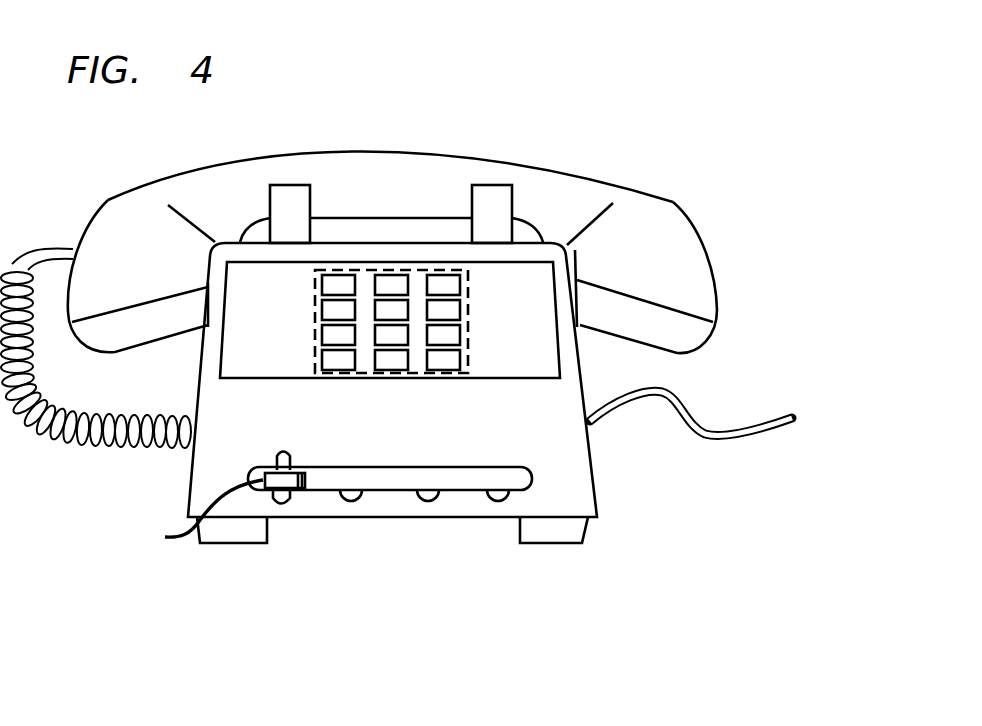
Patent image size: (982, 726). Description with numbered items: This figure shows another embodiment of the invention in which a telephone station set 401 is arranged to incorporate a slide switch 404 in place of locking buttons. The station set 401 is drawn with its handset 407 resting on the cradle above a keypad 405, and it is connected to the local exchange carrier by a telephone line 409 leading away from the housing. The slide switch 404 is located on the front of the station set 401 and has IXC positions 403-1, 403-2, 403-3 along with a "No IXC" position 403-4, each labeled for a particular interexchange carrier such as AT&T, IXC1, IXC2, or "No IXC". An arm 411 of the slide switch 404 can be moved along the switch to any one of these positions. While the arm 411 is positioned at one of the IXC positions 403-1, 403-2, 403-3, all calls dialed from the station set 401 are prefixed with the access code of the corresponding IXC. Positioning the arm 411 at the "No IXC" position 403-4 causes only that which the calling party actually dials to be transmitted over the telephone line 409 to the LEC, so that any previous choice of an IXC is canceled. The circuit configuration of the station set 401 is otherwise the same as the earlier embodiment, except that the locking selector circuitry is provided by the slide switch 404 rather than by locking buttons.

The telephone station set 401 is at (597, 493).
The IXC position 403-1 is at (280, 507).
The IXC position 403-2 is at (350, 503).
The IXC position 403-3 is at (428, 503).
The "No IXC" position 403-4 is at (498, 503).
The slide switch 404 is at (250, 470).
The keypad 405 is at (467, 313).
The handset 407 is at (557, 170).
The telephone line 409 is at (780, 407).
The arm 411 is at (188, 522).